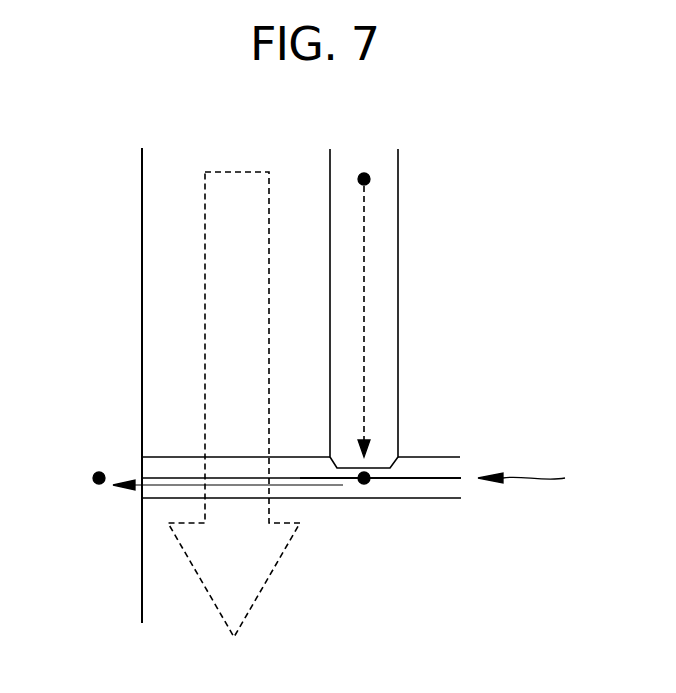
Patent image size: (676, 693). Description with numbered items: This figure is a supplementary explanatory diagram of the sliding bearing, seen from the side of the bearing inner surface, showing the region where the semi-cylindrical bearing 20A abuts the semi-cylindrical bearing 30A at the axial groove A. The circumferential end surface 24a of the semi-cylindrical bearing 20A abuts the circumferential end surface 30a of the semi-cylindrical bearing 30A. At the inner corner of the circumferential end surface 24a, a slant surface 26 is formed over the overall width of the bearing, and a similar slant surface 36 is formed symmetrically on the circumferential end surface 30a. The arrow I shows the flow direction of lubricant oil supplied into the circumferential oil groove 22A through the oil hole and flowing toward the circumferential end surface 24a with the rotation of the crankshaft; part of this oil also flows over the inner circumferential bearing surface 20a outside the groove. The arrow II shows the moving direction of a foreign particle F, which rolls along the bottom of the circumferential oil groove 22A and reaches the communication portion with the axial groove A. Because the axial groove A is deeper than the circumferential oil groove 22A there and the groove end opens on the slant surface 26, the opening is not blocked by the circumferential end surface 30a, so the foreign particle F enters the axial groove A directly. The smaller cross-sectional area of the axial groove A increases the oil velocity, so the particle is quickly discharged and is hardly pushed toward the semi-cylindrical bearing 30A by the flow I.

The semi-cylindrical bearing 20A is at (142, 350).
The inner circumferential bearing surface 20a is at (158, 285).
The semi-cylindrical bearing 30A is at (142, 577).
The circumferential oil groove 22A is at (380, 289).
The slant surface 26 is at (452, 470).
The slant surface 36 is at (448, 487).
The circumferential end surface 30a is at (418, 477).
The circumferential end surface 24a is at (408, 482).
The arrow showing lubricant oil flow direction I is at (205, 231).
The arrow showing moving direction of foreign particle II is at (364, 254).
The foreign particle F is at (364, 173).
The axial groove A is at (530, 482).